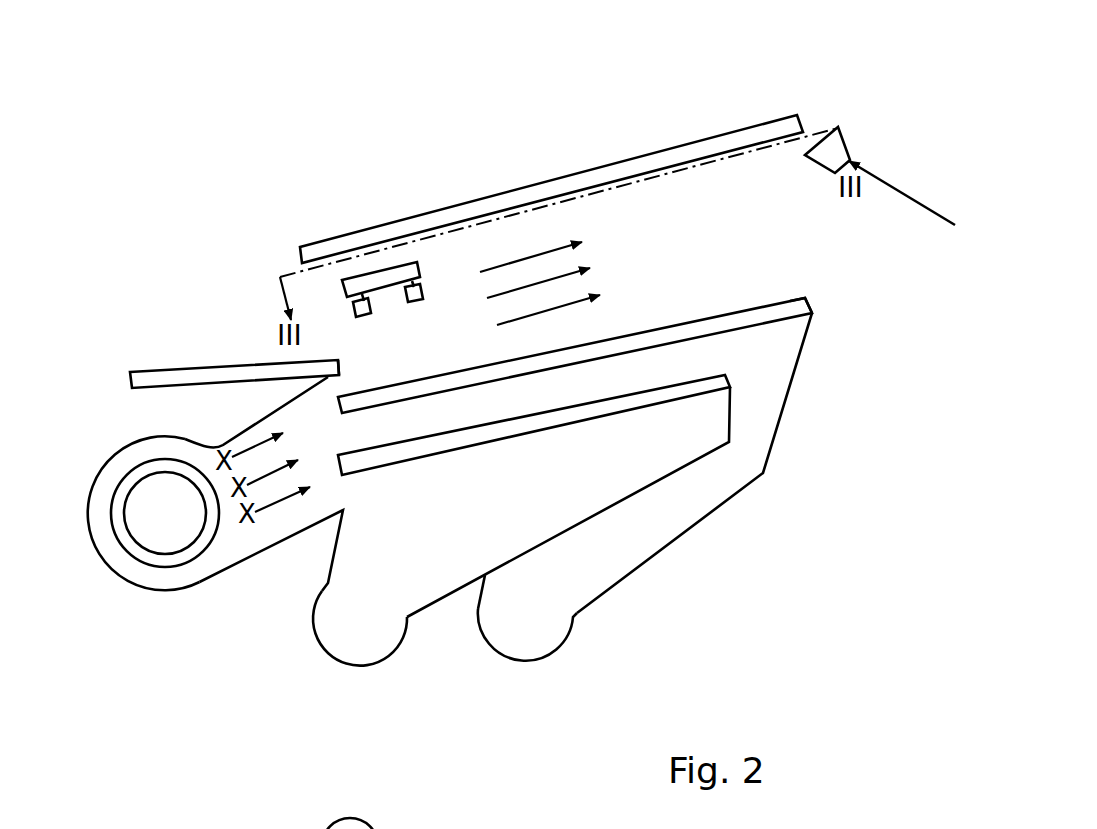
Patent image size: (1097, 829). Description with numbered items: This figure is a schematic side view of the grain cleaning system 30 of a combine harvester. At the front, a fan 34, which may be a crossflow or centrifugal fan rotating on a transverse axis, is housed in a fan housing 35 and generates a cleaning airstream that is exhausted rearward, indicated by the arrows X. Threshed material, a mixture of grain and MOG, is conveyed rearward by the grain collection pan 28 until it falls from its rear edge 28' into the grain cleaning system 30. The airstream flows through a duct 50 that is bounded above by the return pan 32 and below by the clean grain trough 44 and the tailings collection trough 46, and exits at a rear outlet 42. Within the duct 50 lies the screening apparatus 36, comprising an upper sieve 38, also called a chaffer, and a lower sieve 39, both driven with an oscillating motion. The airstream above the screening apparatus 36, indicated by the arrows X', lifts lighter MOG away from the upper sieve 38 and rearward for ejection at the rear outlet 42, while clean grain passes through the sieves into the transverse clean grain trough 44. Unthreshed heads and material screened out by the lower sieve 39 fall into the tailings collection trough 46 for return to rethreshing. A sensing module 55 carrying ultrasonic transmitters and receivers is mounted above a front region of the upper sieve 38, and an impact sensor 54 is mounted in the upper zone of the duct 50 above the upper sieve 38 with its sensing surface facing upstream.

The grain collection pan 28 is at (234, 333).
The rear edge 28' is at (308, 265).
The grain cleaning system 30 is at (800, 428).
The return pan 32 is at (733, 128).
The fan 34 is at (128, 560).
The fan housing 35 is at (173, 590).
The screening apparatus 36 is at (721, 312).
The upper sieve 38 is at (793, 300).
The lower sieve 39 is at (727, 386).
The rear outlet 42 is at (902, 206).
The clean grain trough 44 is at (432, 605).
The tailings collection trough 46 is at (633, 573).
The duct 50 is at (681, 251).
The impact sensor 54 is at (825, 155).
The sensing module 55 is at (377, 273).